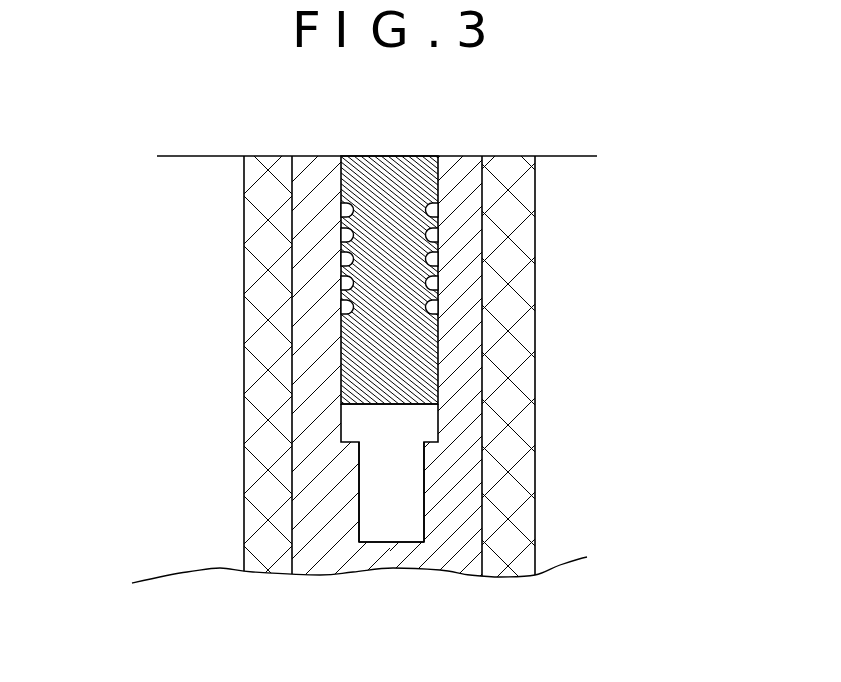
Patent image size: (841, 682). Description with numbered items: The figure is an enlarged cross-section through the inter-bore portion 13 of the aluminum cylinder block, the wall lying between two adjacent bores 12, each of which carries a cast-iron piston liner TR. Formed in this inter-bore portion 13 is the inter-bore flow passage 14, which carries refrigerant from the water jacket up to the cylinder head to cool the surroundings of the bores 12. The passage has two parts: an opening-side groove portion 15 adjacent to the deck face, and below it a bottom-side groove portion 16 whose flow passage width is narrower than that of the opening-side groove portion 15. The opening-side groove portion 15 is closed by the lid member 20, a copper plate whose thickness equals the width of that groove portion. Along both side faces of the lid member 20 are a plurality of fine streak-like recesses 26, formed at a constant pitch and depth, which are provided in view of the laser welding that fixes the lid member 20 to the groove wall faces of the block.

The bore 12 is at (317, 212).
The inter-bore portion 13 is at (405, 565).
The inter-bore flow passage 14 is at (390, 464).
The opening-side groove portion 15 is at (356, 430).
The bottom-side groove portion 16 is at (359, 488).
The lid member 20 is at (415, 380).
The recess 26 is at (437, 257).
The piston liner TR is at (270, 488).